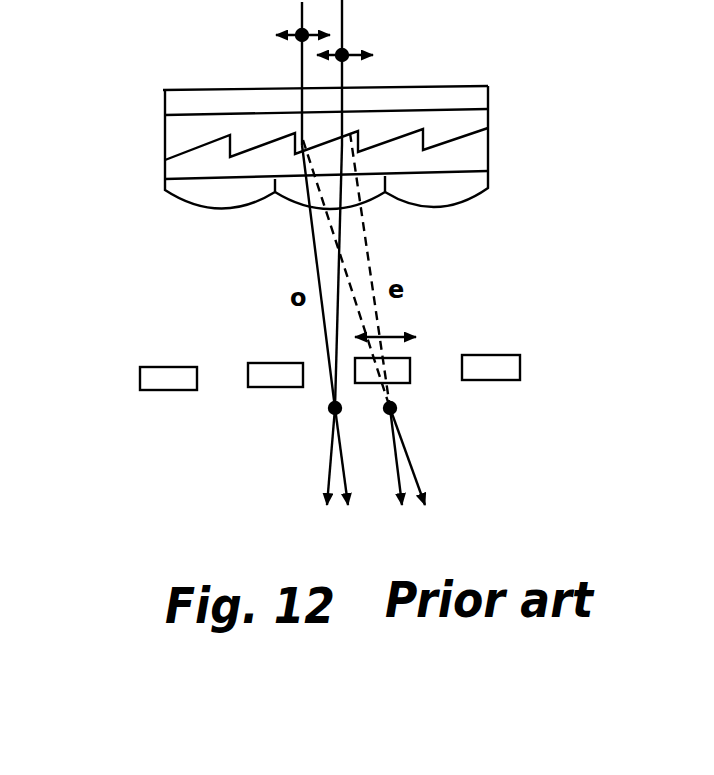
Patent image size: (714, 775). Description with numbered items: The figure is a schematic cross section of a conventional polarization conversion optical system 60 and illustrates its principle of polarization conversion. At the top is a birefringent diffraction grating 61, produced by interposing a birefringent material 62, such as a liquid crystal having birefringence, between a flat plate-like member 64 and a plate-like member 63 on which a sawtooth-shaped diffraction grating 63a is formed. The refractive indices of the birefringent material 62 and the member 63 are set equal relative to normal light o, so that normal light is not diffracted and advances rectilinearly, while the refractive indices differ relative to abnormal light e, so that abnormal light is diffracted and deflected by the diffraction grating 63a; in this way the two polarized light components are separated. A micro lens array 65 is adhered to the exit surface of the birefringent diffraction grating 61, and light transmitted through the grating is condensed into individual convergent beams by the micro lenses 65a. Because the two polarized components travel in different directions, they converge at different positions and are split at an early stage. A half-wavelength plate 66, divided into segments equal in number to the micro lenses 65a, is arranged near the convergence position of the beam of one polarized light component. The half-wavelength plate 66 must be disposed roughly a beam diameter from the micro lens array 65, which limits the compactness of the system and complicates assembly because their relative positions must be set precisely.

The polarization conversion optical system 60 is at (330, 437).
The birefringent diffraction grating 61 is at (335, 170).
The birefringent material 62 is at (480, 118).
The plate-like member 63 is at (373, 177).
The diffraction grating 63a is at (478, 157).
The flat plate-like member 64 is at (477, 92).
The micro lens array 65 is at (288, 214).
The micro lens 65a is at (292, 208).
The half-wavelength plate 66 is at (408, 381).